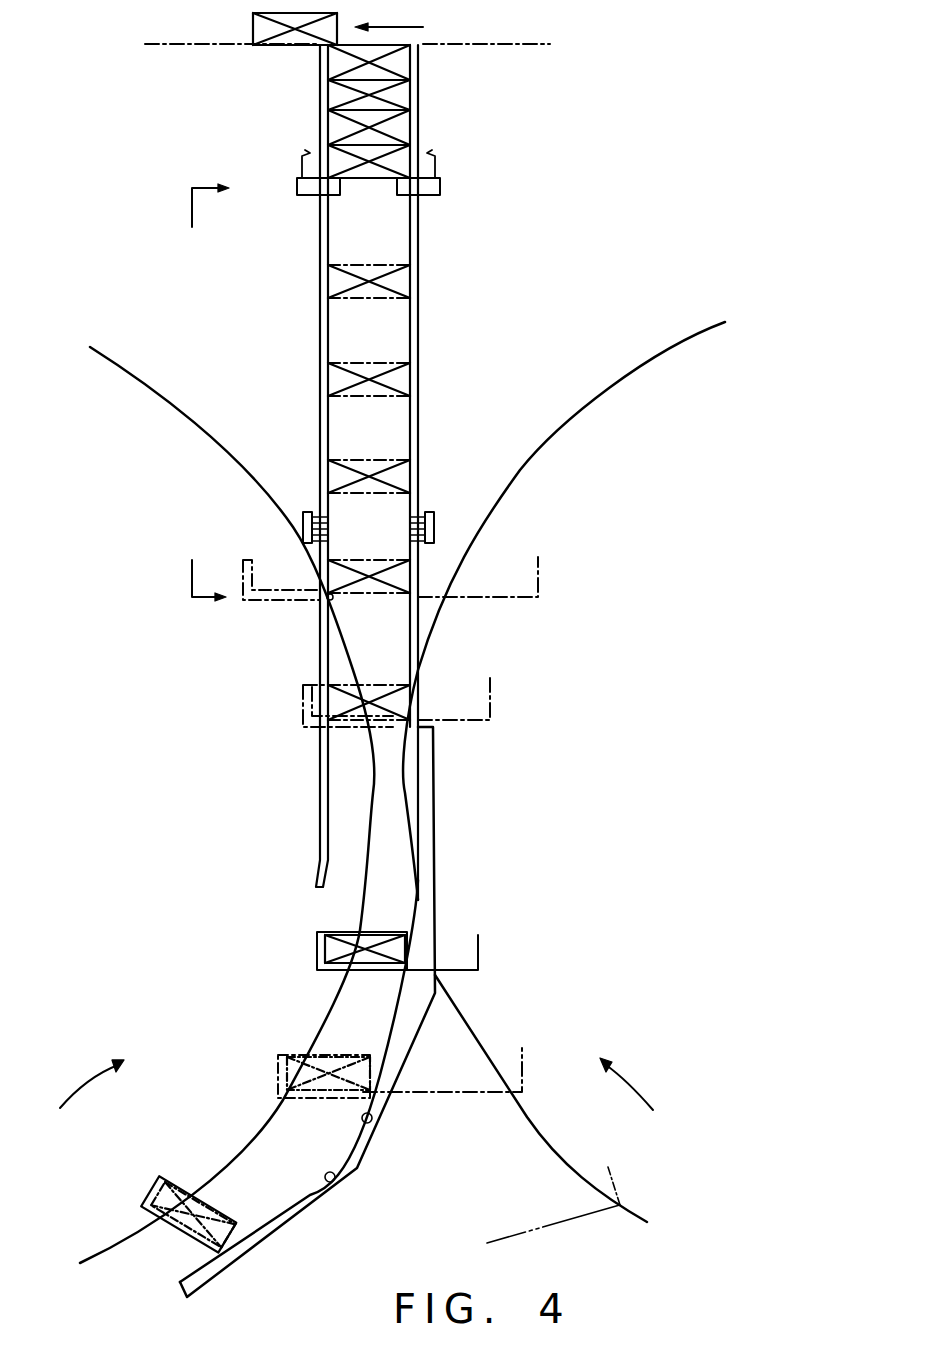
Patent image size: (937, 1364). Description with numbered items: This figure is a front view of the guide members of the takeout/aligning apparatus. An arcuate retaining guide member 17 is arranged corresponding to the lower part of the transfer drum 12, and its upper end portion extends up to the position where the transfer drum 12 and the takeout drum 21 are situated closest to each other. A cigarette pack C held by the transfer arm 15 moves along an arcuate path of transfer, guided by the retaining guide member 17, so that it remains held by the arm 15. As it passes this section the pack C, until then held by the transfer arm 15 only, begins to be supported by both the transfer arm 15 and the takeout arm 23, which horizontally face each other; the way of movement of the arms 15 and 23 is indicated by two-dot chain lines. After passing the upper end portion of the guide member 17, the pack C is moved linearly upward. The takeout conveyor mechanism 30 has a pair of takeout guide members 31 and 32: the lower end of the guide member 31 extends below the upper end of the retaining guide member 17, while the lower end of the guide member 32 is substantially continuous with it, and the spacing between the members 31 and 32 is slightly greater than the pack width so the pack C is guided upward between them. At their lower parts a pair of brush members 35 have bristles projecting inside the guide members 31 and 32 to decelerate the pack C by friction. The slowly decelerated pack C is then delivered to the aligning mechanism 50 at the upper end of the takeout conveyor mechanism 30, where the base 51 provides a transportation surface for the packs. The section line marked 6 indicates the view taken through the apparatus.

The section line 6- 6 is at (197, 388).
The transfer drum 12 is at (132, 367).
The transfer arm 15 is at (250, 610).
The retaining guide member 17 is at (433, 900).
The takeout drum 21 is at (675, 343).
The takeout arm 23 is at (530, 603).
The takeout conveyor mechanism 30 is at (474, 305).
The takeout guide member 31 is at (328, 381).
The takeout guide member 32 is at (418, 381).
The brush member 35 is at (303, 522).
The aligning mechanism 50 is at (478, 133).
The base 51 is at (515, 46).
The cigarette pack C is at (253, 27).